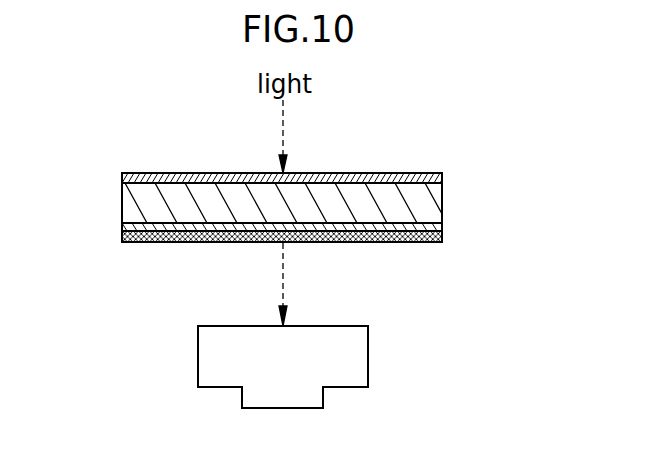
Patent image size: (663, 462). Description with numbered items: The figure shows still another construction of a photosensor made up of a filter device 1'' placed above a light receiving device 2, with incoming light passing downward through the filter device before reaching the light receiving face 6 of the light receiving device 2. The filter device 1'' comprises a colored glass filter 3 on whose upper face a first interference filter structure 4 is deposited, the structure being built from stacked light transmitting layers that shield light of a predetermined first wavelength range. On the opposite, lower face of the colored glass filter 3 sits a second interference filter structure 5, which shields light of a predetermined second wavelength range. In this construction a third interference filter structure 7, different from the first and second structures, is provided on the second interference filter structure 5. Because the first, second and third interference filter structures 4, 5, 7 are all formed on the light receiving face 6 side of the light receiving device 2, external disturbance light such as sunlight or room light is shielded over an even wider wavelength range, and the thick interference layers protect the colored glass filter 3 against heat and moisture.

The filter device 1'' is at (247, 178).
The light receiving device 2 is at (353, 357).
The colored glass filter 3 is at (133, 203).
The first interference filter structure 4 is at (426, 174).
The second interference filter structure 5 is at (440, 227).
The light receiving face 6 is at (252, 325).
The third interference filter structure 7 is at (418, 241).